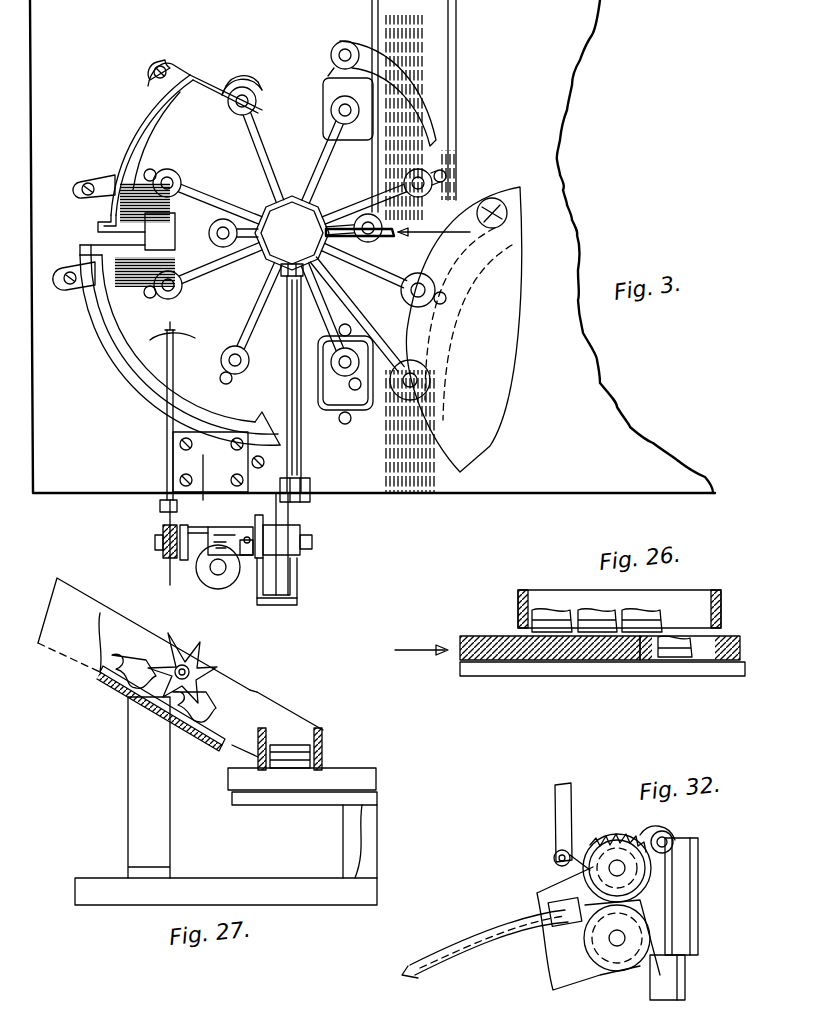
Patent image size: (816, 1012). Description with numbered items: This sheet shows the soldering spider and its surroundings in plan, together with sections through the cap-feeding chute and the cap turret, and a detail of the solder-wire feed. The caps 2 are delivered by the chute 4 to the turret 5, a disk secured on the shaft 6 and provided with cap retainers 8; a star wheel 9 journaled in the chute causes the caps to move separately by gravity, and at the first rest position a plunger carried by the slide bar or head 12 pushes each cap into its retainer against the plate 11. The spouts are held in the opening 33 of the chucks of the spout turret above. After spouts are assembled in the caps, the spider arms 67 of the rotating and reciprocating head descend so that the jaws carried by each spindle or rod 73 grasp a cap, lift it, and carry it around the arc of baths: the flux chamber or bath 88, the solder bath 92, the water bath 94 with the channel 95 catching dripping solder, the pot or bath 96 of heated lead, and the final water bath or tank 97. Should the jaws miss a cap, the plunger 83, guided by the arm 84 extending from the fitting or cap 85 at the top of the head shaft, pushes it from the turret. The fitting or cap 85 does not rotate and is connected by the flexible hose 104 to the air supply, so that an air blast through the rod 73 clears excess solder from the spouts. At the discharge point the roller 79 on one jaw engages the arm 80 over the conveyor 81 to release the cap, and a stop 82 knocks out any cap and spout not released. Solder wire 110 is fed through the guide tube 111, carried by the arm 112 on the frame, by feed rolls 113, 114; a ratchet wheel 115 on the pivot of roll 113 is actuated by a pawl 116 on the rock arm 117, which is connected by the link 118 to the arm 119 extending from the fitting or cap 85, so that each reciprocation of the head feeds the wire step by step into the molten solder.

In FIG. 27, the cap 2 is at (135, 670).
In FIG. 27, the chute 4 is at (300, 730).
In FIG. 26, the chute 4 is at (722, 604).
In FIG. 3, the turret 5 is at (500, 372).
In FIG. 27, the turret 5 is at (362, 780).
In FIG. 26, the turret 5 is at (462, 616).
In FIG. 3, the shaft 6 is at (433, 393).
In FIG. 3, the cap retainer 8 is at (518, 205).
In FIG. 26, the cap retainer 8 is at (722, 665).
In FIG. 27, the star wheel 9 is at (200, 620).
In FIG. 27, the plate 11 is at (352, 878).
In FIG. 26, the plate 11 is at (620, 676).
In FIG. 26, the slide bar or head 12 is at (660, 610).
In FIG. 26, the opening 33 is at (568, 600).
In FIG. 3, the spider arm 67 is at (264, 310).
In FIG. 3, the spindle or rod 73 is at (218, 88).
In FIG. 3, the roller 79 is at (145, 170).
In FIG. 3, the arm 80 is at (420, 113).
In FIG. 3, the conveyor 81 is at (445, 62).
In FIG. 3, the stop 82 is at (420, 196).
In FIG. 3, the plunger 83 is at (487, 452).
In FIG. 3, the arm 84 is at (385, 292).
In FIG. 3, the fitting or cap 85 is at (292, 236).
In FIG. 3, the flux chamber or bath 88 is at (368, 410).
In FIG. 3, the solder bath 92 is at (155, 360).
In FIG. 3, the water bath 94 is at (128, 142).
In FIG. 3, the channel 95 is at (127, 234).
In FIG. 3, the pot or bath 96 is at (240, 98).
In FIG. 3, the bath or tank 97 is at (318, 70).
In FIG. 3, the flexible hose 104 is at (338, 222).
In FIG. 3, the solder wire 110 is at (152, 340).
In FIG. 32, the solder wire 110 is at (430, 962).
In FIG. 3, the guide tube 111 is at (165, 451).
In FIG. 32, the guide tube 111 is at (489, 942).
In FIG. 3, the arm 112 is at (205, 514).
In FIG. 32, the arm 112 is at (552, 900).
In FIG. 3, the feed roll 113 is at (155, 553).
In FIG. 32, the feed roll 113 is at (640, 878).
In FIG. 32, the feed roll 114 is at (645, 925).
In FIG. 3, the ratchet wheel 115 is at (290, 514).
In FIG. 32, the ratchet wheel 115 is at (612, 830).
In FIG. 3, the pawl 116 is at (238, 585).
In FIG. 32, the pawl 116 is at (668, 830).
In FIG. 3, the rock arm 117 is at (300, 566).
In FIG. 32, the rock arm 117 is at (658, 858).
In FIG. 3, the link 118 is at (312, 500).
In FIG. 32, the link 118 is at (560, 806).
In FIG. 3, the arm 119 is at (300, 455).